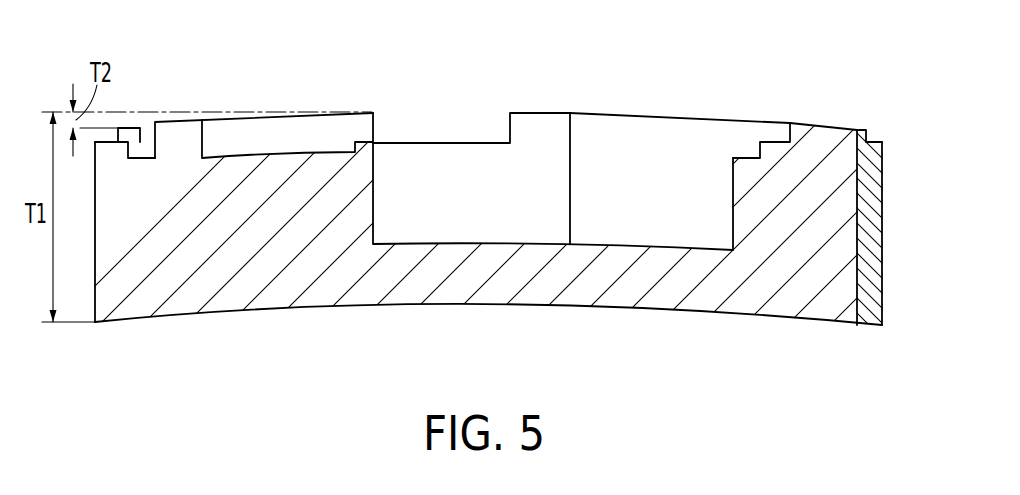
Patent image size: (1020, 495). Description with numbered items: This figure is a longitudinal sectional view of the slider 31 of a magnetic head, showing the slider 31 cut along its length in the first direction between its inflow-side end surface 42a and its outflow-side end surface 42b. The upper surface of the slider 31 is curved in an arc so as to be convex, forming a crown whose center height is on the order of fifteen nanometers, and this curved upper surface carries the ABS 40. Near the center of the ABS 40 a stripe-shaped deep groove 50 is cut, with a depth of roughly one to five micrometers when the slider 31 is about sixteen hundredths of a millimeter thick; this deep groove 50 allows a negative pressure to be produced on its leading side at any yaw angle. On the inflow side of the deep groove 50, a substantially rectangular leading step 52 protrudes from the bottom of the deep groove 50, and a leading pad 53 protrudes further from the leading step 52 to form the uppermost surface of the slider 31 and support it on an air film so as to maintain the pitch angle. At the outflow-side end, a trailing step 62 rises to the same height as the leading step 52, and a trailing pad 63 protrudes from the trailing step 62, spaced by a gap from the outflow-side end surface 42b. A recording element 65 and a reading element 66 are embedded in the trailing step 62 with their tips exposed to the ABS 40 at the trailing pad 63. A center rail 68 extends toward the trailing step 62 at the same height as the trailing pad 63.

The slider 31 is at (314, 290).
The ABS 40 is at (742, 117).
The inflow-side end surface 42a is at (95, 322).
The outflow-side end surface 42b is at (884, 302).
The deep groove 50 is at (453, 243).
The leading step 52 is at (218, 187).
The leading pad 53 is at (270, 113).
The trailing step 62 is at (775, 157).
The trailing pad 63 is at (812, 123).
The recording element 65 is at (862, 130).
The reading element 66 is at (870, 221).
The center rail 68 is at (614, 113).